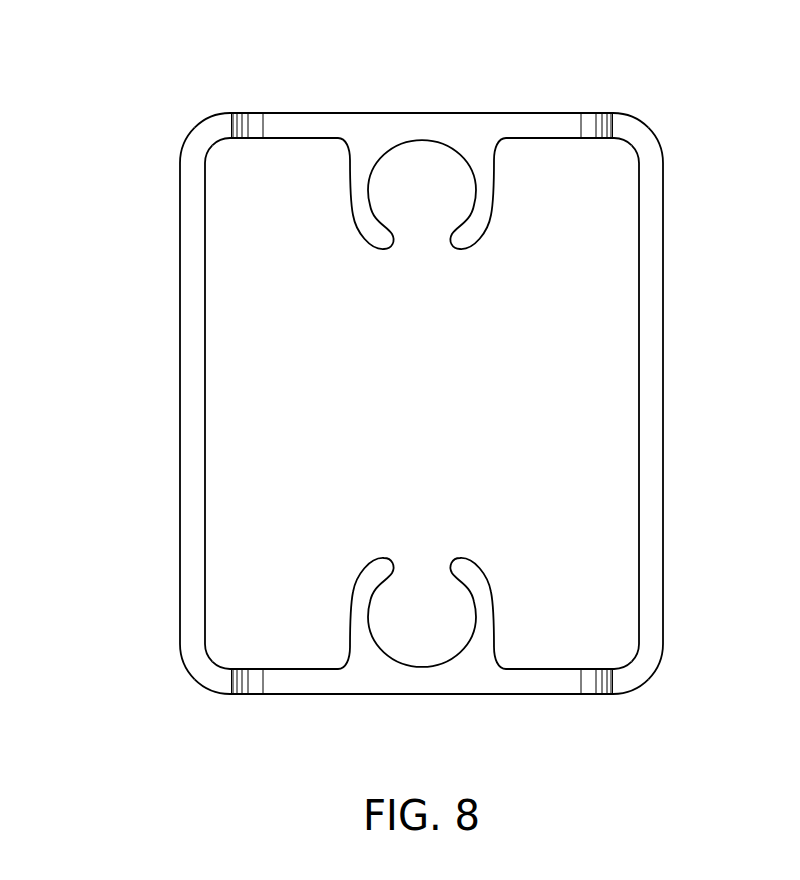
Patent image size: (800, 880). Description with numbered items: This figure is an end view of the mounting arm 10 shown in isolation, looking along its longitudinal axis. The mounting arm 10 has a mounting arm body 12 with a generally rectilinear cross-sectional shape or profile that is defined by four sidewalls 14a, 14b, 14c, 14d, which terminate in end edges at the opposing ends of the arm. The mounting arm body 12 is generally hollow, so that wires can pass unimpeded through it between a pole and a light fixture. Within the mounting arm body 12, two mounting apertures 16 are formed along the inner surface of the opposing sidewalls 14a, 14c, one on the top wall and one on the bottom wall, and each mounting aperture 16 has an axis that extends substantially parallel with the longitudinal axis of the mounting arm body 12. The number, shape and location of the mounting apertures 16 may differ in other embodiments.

The mounting arm 10 is at (122, 104).
The mounting arm body 12 is at (640, 137).
The sidewall 14a is at (432, 113).
The sidewall 14b is at (664, 400).
The sidewall 14c is at (537, 694).
The sidewall 14d is at (179, 393).
The mounting aperture 16 is at (425, 227).